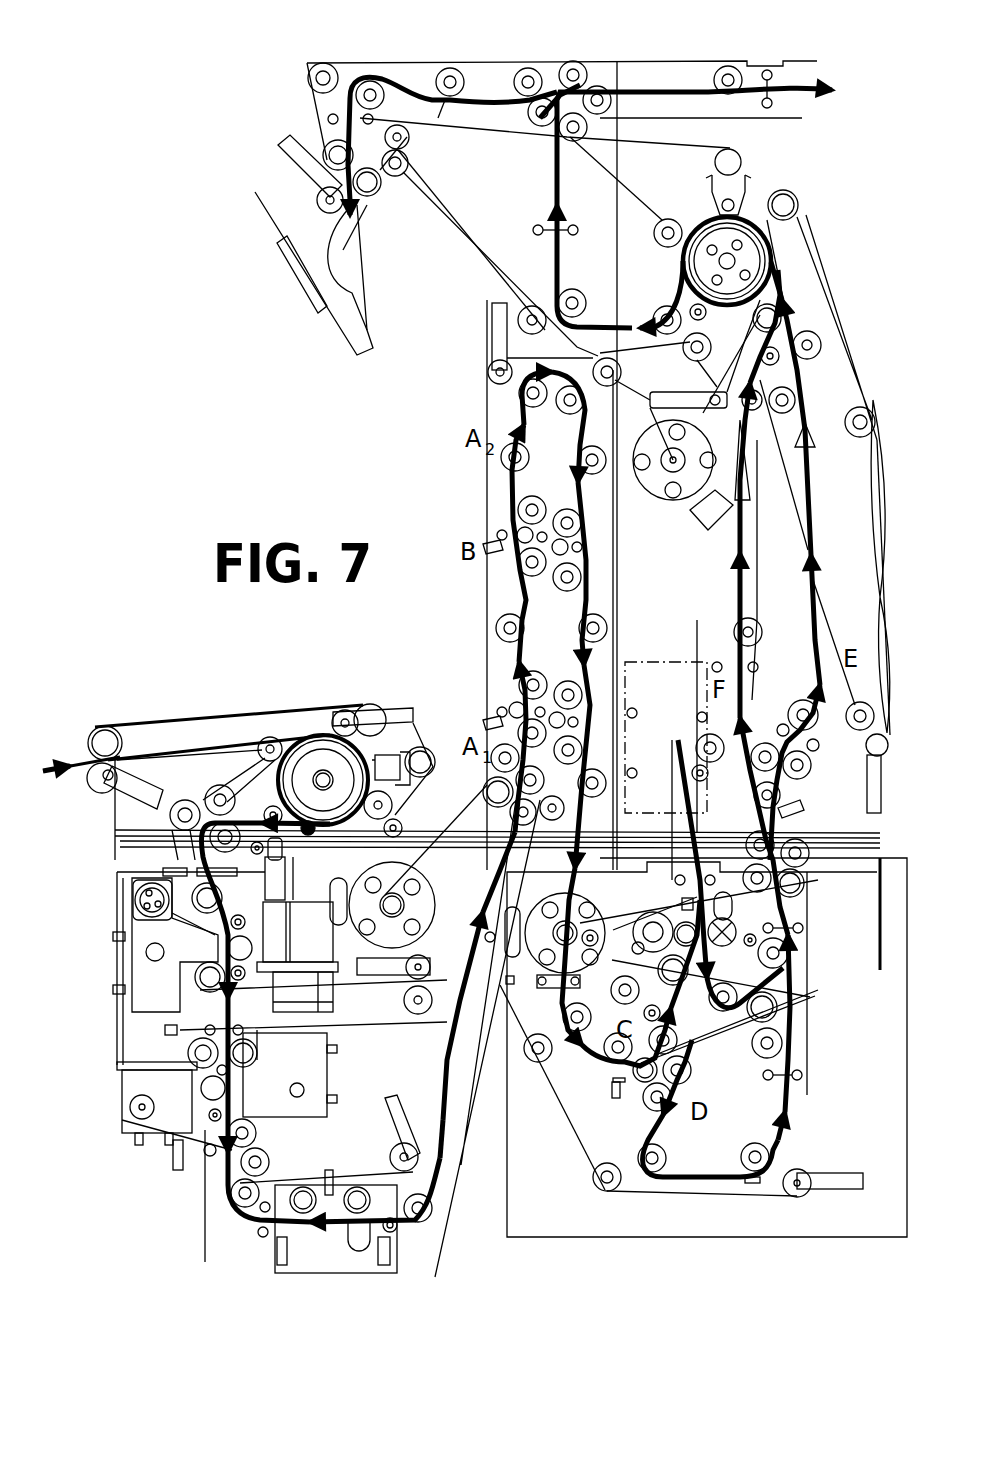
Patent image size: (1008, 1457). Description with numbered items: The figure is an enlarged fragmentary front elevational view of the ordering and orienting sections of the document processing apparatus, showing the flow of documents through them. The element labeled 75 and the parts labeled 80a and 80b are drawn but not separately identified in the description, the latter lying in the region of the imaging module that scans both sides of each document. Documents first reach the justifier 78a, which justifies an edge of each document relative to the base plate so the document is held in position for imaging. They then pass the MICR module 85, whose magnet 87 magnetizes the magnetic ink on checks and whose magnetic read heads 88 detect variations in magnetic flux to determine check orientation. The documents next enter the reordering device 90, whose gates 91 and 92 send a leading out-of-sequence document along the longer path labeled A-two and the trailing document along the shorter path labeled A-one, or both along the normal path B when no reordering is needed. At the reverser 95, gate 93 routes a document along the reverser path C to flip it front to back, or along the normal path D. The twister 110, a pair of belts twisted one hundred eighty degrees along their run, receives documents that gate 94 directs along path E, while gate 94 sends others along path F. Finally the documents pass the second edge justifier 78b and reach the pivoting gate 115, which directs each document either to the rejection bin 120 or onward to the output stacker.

The tape feed belt 75 is at (206, 710).
The justifier 78a is at (310, 757).
The second edge justifier 78b is at (745, 215).
The tape handling unit 80a is at (143, 968).
The tape handling unit 80b is at (308, 1077).
The MICR module 85 is at (320, 1263).
The magnet 87 is at (260, 1212).
The magnetic read heads 88 is at (393, 1225).
The reordering device 90 is at (510, 597).
The gate 91 is at (508, 724).
The gate 92 is at (508, 528).
The gate 93 is at (610, 1091).
The gate 94 is at (740, 775).
The reverser 95 is at (740, 967).
The twister 110 is at (822, 522).
The gate 115 is at (557, 100).
The rejection bin 120 is at (315, 263).